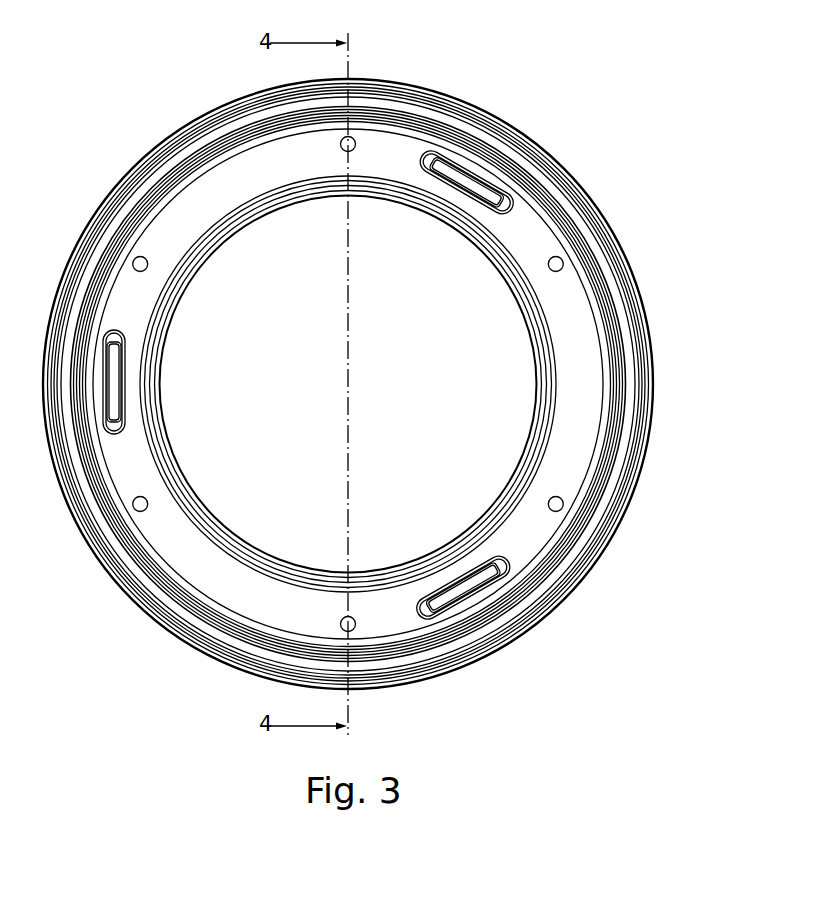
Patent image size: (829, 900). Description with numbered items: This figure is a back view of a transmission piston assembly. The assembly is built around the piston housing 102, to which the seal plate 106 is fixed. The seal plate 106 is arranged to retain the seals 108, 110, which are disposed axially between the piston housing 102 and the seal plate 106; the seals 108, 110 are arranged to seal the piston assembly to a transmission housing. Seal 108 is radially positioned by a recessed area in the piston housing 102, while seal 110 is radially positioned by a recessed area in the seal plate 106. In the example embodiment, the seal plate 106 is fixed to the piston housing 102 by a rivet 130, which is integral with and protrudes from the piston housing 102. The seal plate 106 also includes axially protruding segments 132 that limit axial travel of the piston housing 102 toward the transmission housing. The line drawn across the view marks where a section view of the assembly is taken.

The piston housing 102 is at (387, 82).
The seal plate 106 is at (205, 197).
The seal 108 is at (365, 190).
The seal 110 is at (460, 112).
The rivet 130 is at (556, 263).
The axially protruding segments 132 is at (477, 185).